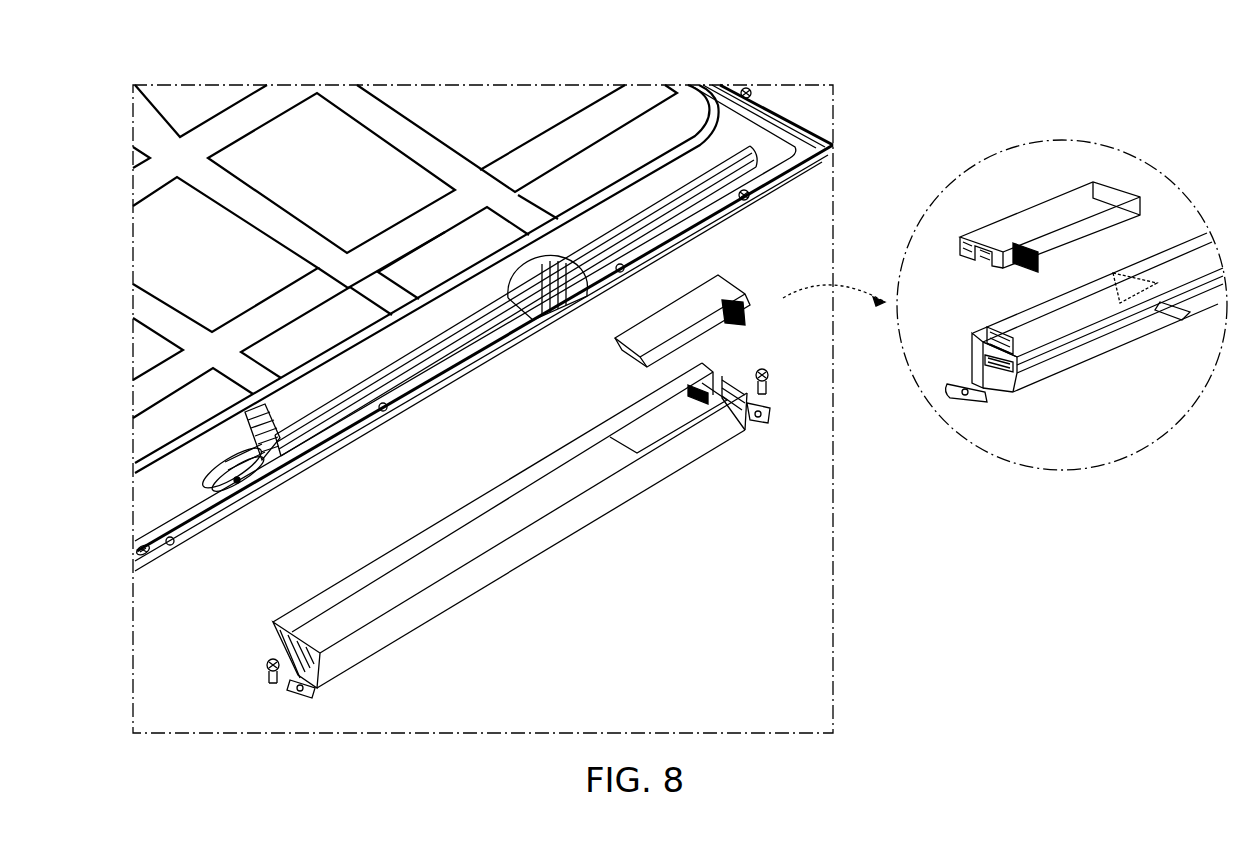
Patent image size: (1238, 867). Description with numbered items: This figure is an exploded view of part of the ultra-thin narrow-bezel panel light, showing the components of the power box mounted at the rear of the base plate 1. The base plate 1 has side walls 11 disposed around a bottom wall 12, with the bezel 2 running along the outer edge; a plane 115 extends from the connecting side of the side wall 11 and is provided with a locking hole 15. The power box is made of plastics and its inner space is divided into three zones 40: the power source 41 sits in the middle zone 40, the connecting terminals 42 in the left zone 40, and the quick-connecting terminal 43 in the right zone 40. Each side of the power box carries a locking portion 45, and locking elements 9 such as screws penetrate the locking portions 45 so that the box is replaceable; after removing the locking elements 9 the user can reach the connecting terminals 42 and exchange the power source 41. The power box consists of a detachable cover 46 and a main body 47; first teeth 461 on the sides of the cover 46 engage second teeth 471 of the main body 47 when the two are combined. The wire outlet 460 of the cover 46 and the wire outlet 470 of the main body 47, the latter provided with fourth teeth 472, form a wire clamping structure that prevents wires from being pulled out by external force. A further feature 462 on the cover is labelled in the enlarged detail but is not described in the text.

The base plate 1 is at (461, 95).
The bezel 2 is at (752, 146).
The locking elements 9 is at (763, 368).
The side walls 11 is at (150, 503).
The bottom wall 12 is at (172, 248).
The locking hole 15 is at (172, 550).
The plane 115 is at (197, 513).
The zones 40 is at (660, 435).
The power source 41 is at (448, 377).
The connecting terminals 42 is at (262, 487).
The quick-connecting terminal 43 is at (560, 300).
The locking portion 45 is at (757, 424).
The detachable cover 46 is at (725, 295).
The main body 47 is at (1097, 343).
The wire outlet 460 is at (990, 262).
The first teeth 461 is at (1033, 262).
The slot 462 is at (973, 255).
The wire outlet 470 is at (983, 350).
The second teeth 471 is at (1000, 330).
The fourth teeth 472 is at (1000, 377).